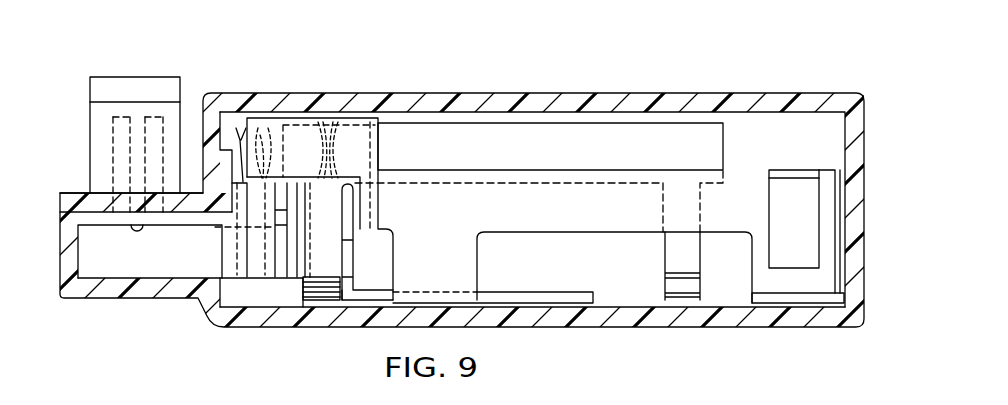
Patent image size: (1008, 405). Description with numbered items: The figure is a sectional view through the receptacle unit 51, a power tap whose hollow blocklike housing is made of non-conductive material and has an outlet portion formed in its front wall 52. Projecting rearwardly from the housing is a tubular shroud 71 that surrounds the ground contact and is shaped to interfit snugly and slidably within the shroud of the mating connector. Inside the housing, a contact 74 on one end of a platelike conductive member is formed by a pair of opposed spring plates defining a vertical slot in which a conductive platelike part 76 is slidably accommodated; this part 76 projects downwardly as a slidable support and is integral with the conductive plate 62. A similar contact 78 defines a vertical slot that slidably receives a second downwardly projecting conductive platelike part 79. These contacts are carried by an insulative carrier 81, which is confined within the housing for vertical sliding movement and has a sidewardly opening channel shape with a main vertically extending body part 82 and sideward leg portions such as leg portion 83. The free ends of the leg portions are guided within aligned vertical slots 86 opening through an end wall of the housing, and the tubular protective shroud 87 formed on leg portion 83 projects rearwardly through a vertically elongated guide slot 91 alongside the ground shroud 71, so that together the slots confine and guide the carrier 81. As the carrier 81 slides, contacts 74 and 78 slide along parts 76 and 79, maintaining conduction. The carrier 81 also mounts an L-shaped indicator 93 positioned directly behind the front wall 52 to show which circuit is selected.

The receptacle unit 51 is at (734, 86).
The front wall 52 is at (700, 318).
The conductive plate 62 is at (553, 195).
The tubular shroud 71 is at (122, 85).
The contact 74 is at (267, 178).
The conductive platelike part 76 is at (245, 130).
The contact 78 is at (337, 153).
The conductive platelike part 79 is at (333, 120).
The carrier 81 is at (249, 281).
The main body part 82 is at (230, 258).
The leg portion 83 is at (188, 220).
The vertical slots 86 is at (68, 217).
The tubular protective shroud 87 is at (93, 137).
The guide slot 91 is at (100, 200).
The indicator 93 is at (536, 298).